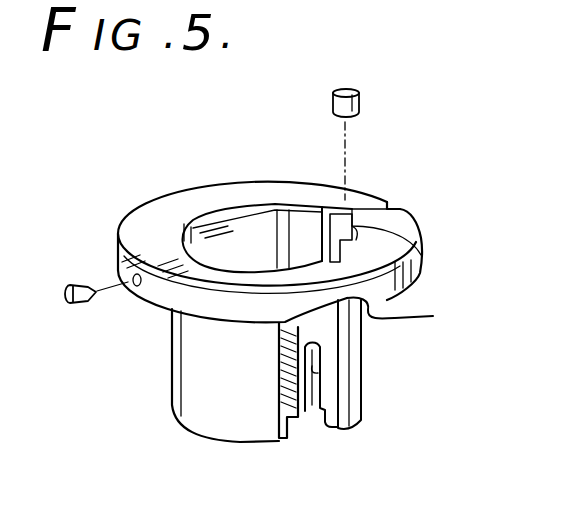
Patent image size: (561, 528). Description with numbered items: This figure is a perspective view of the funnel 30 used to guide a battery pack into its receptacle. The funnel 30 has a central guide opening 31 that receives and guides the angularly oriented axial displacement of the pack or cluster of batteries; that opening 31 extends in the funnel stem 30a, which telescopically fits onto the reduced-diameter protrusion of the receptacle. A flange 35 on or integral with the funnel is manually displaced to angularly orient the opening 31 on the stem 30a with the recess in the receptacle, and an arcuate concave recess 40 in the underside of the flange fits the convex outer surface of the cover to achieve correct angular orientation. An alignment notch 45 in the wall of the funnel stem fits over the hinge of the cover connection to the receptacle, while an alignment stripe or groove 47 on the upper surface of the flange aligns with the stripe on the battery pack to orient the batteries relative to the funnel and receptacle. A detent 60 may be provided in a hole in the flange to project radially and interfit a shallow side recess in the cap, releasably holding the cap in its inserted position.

The funnel 30 is at (273, 313).
The funnel stem 30a is at (217, 410).
The central guide opening 31 is at (232, 247).
The flange 35 is at (397, 243).
The arcuate concave recess 40 is at (413, 310).
The alignment notch 45 is at (312, 377).
The alignment stripe or groove 47 is at (381, 203).
The detent 60 is at (73, 280).